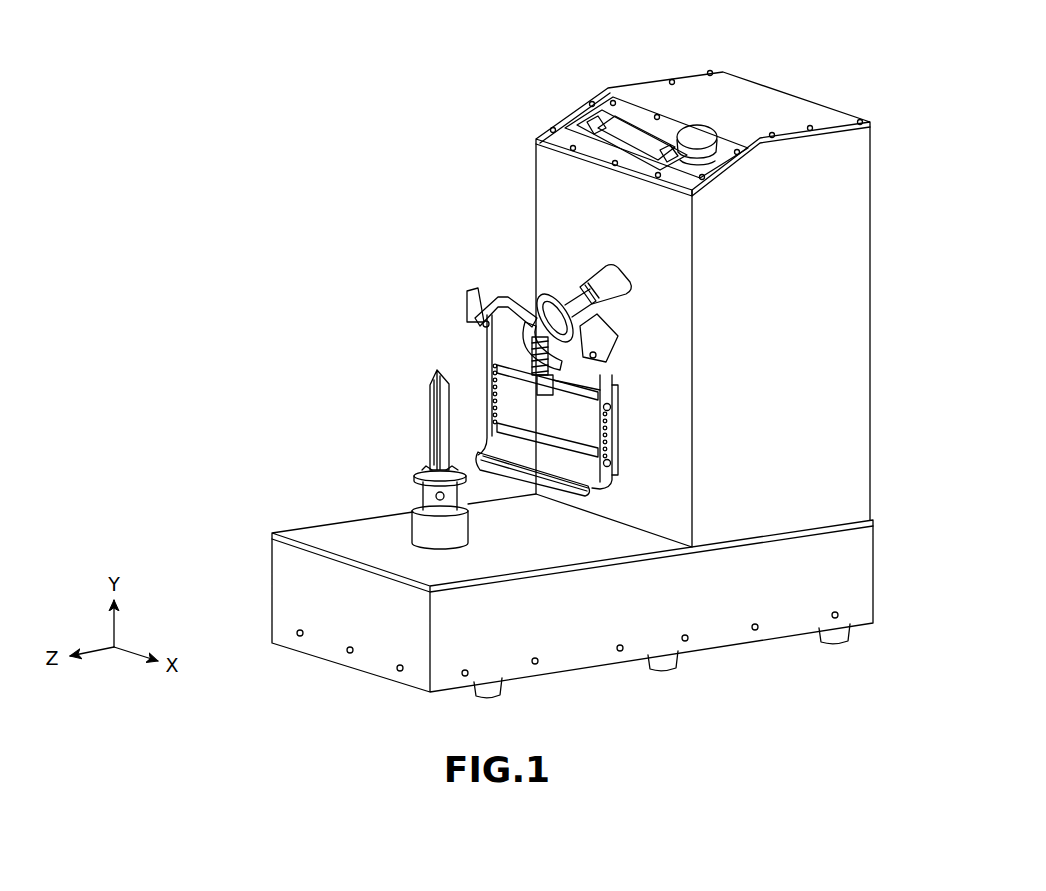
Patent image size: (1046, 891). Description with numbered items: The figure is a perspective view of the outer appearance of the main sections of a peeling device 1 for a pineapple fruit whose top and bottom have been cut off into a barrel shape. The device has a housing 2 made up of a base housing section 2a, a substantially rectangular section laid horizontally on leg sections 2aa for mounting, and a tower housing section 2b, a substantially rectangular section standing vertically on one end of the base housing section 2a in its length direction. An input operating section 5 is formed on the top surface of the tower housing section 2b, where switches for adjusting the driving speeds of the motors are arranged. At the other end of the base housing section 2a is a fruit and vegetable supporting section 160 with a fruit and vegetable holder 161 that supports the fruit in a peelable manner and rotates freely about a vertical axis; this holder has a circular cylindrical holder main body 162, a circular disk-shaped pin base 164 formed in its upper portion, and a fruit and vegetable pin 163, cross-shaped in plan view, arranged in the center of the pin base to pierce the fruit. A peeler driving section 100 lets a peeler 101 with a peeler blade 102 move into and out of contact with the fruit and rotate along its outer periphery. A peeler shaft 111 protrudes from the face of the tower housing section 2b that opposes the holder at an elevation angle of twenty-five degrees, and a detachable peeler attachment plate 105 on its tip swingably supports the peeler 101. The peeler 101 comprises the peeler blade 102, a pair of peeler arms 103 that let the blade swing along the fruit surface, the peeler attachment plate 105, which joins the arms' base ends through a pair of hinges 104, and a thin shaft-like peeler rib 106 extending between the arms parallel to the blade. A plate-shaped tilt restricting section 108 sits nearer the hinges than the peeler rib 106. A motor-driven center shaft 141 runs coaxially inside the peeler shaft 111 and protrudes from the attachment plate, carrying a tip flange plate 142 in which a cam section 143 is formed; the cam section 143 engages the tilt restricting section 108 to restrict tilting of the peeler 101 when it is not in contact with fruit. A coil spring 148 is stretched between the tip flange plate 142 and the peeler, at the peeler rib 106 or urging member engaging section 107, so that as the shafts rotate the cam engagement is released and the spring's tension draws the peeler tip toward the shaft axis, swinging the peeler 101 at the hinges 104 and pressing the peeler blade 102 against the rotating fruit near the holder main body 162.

The peeling device 1 is at (400, 120).
The housing 2 is at (890, 141).
The base housing section 2a is at (875, 588).
The leg sections 2aa is at (857, 642).
The tower housing section 2b is at (875, 392).
The input operating section 5 is at (562, 131).
The peeler driving section 100 is at (468, 214).
The peeler 101 is at (443, 328).
The peeler blade 102 is at (553, 488).
The peeler arms 103 is at (484, 372).
The hinges 104 is at (470, 316).
The peeler attachment plate 105 is at (605, 322).
The peeler rib 106 is at (510, 373).
The urging member engaging section 107 is at (558, 395).
The tilt restricting section 108 is at (556, 378).
The peeler shaft 111 is at (548, 302).
The center shaft 141 is at (537, 315).
The tip flange plate 142 is at (525, 325).
The cam section 143 is at (613, 388).
The coil spring 148 is at (550, 393).
The fruit and vegetable supporting section 160 is at (312, 463).
The fruit and vegetable holder 161 is at (398, 370).
The holder main body 162 is at (424, 497).
The fruit and vegetable pin 163 is at (436, 405).
The pin base 164 is at (425, 478).